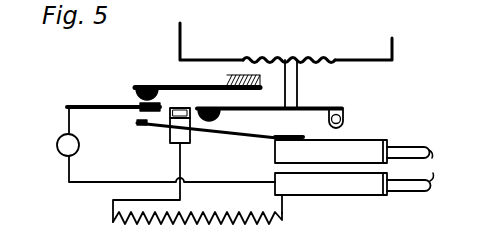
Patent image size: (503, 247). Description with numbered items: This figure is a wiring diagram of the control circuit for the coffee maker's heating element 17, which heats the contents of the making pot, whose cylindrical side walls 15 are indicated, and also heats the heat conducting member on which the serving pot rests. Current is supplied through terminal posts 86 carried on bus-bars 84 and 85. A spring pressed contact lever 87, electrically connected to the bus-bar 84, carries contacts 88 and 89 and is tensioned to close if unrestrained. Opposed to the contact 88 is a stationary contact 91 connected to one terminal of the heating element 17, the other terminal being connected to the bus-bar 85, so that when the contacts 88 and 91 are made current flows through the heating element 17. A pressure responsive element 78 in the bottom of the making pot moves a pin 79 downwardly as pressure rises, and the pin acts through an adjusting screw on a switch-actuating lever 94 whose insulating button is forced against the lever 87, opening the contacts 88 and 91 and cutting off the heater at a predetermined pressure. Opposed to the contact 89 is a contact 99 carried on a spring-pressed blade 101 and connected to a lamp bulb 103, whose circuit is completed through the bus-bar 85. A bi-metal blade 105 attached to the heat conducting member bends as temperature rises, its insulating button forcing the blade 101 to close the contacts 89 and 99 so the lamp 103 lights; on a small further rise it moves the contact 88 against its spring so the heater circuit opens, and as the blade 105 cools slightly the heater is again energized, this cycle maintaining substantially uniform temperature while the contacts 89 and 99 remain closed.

The cylindrical side walls 15 is at (183, 35).
The heating element 17 is at (117, 226).
The pressure responsive element 78 is at (315, 57).
The pin 79 is at (290, 78).
The bus-bar 84 is at (350, 147).
The bus-bar 85 is at (333, 188).
The terminal posts 86 is at (433, 181).
The spring pressed contact lever 87 is at (248, 129).
The contact 88 is at (192, 134).
The contact 89 is at (140, 127).
The stationary contact 91 is at (175, 110).
The switch-actuating lever 94 is at (320, 107).
The contact 99 is at (137, 104).
The spring-pressed blade 101 is at (98, 105).
The lamp bulb 103 is at (60, 158).
The bi-metal blade 105 is at (172, 85).